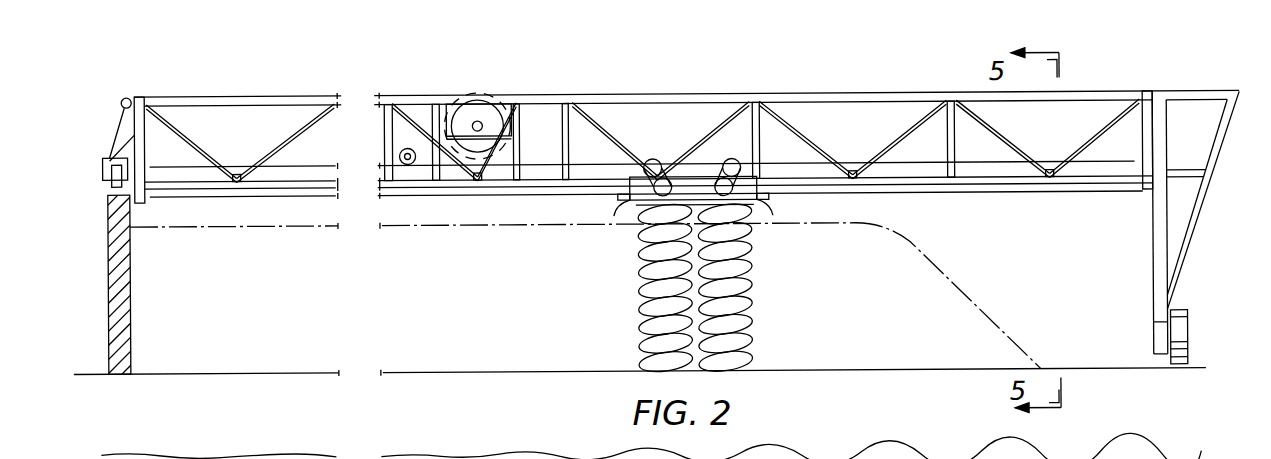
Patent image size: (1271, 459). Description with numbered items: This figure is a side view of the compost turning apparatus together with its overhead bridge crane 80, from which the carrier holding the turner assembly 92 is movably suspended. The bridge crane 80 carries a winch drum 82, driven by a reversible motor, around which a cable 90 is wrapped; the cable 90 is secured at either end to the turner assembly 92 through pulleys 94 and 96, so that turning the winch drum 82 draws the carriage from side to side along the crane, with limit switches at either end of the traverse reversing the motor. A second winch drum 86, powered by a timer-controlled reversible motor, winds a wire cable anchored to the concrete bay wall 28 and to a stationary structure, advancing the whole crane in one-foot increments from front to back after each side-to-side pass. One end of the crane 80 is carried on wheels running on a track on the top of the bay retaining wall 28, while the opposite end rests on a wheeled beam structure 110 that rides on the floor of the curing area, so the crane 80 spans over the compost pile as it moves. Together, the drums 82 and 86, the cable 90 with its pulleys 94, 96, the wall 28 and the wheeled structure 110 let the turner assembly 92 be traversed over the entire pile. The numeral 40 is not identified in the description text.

The bay wall 28 is at (125, 308).
The bellows 40 is at (742, 343).
The bridge crane 80 is at (583, 90).
The winch drum 82 is at (400, 152).
The winch drum 86 is at (445, 102).
The cable 90 is at (325, 198).
The turner assembly 92 is at (633, 317).
The pulley 94 is at (624, 201).
The pulley 96 is at (768, 201).
The wheeled beam structure 110 is at (1199, 271).